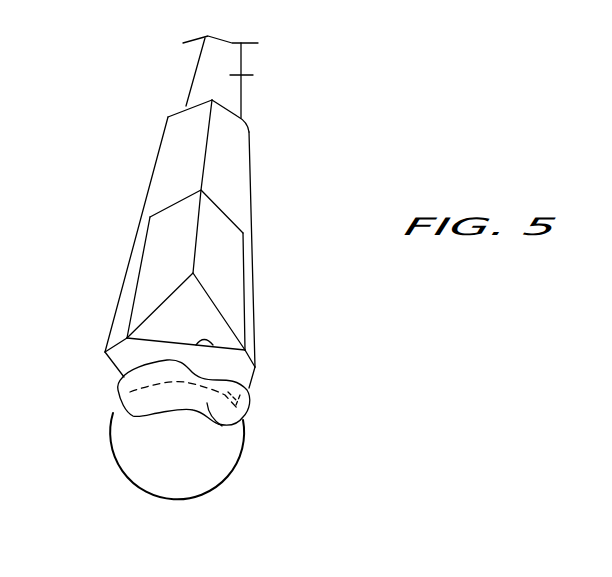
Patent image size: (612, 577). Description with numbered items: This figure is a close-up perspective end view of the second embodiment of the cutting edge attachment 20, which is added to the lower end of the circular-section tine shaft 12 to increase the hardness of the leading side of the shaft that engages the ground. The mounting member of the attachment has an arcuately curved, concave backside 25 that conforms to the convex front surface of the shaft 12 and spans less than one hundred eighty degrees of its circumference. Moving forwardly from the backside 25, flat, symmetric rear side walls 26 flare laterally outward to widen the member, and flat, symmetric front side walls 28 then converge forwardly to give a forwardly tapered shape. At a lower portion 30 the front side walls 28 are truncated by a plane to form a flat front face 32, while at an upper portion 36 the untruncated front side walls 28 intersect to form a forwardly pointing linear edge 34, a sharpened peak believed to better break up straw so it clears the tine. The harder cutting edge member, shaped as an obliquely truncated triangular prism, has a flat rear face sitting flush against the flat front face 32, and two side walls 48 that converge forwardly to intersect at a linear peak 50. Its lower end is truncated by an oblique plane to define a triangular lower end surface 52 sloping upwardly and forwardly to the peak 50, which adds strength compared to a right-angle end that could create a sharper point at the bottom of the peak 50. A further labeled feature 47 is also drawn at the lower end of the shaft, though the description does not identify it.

The tine shaft 12 is at (243, 74).
The cutting edge attachment 20 is at (310, 151).
The backside 25 is at (213, 430).
The rear side walls 26 is at (110, 369).
The front side walls 28 is at (158, 188).
The lower portion 30 is at (258, 320).
The flat front face 32 is at (253, 362).
The linear edge 34 is at (209, 117).
The upper portion 36 is at (250, 150).
The ball 47 is at (118, 400).
The side walls 48 is at (170, 268).
The linear peak 50 is at (200, 228).
The triangular lower end surface 52 is at (180, 316).